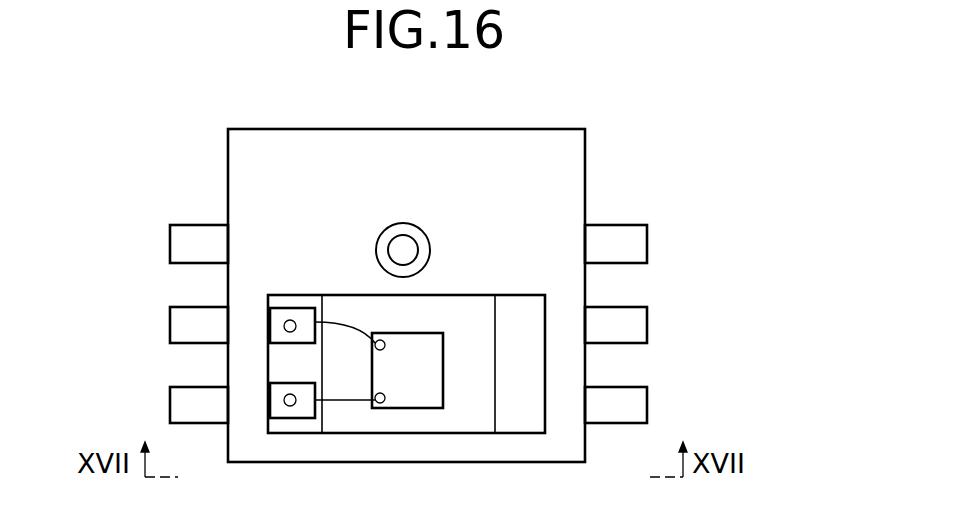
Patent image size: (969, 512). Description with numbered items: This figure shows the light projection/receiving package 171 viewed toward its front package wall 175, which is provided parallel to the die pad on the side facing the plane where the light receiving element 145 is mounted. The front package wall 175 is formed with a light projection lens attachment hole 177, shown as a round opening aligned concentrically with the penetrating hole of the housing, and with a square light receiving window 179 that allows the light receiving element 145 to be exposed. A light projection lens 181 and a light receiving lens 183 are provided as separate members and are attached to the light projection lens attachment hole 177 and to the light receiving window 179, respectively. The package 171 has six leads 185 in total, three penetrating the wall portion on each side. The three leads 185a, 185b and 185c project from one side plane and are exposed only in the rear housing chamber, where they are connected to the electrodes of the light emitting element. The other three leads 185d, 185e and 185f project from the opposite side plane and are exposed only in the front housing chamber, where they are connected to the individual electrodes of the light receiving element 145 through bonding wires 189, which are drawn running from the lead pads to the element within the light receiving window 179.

The light projection/receiving package 171 is at (703, 172).
The front package wall 175 is at (565, 164).
The light projection lens attachment hole 177 is at (390, 248).
The light receiving window 179 is at (525, 432).
The light projection lens 181 is at (402, 243).
The light receiving lens 183 is at (513, 333).
The leads 185 is at (783, 210).
The lead 185a is at (647, 243).
The lead 185b is at (647, 320).
The lead 185c is at (647, 405).
The lead 185d is at (170, 243).
The lead 185e is at (170, 318).
The lead 185f is at (170, 406).
The light receiving element 145 is at (427, 342).
The bonding wires 189 is at (348, 398).